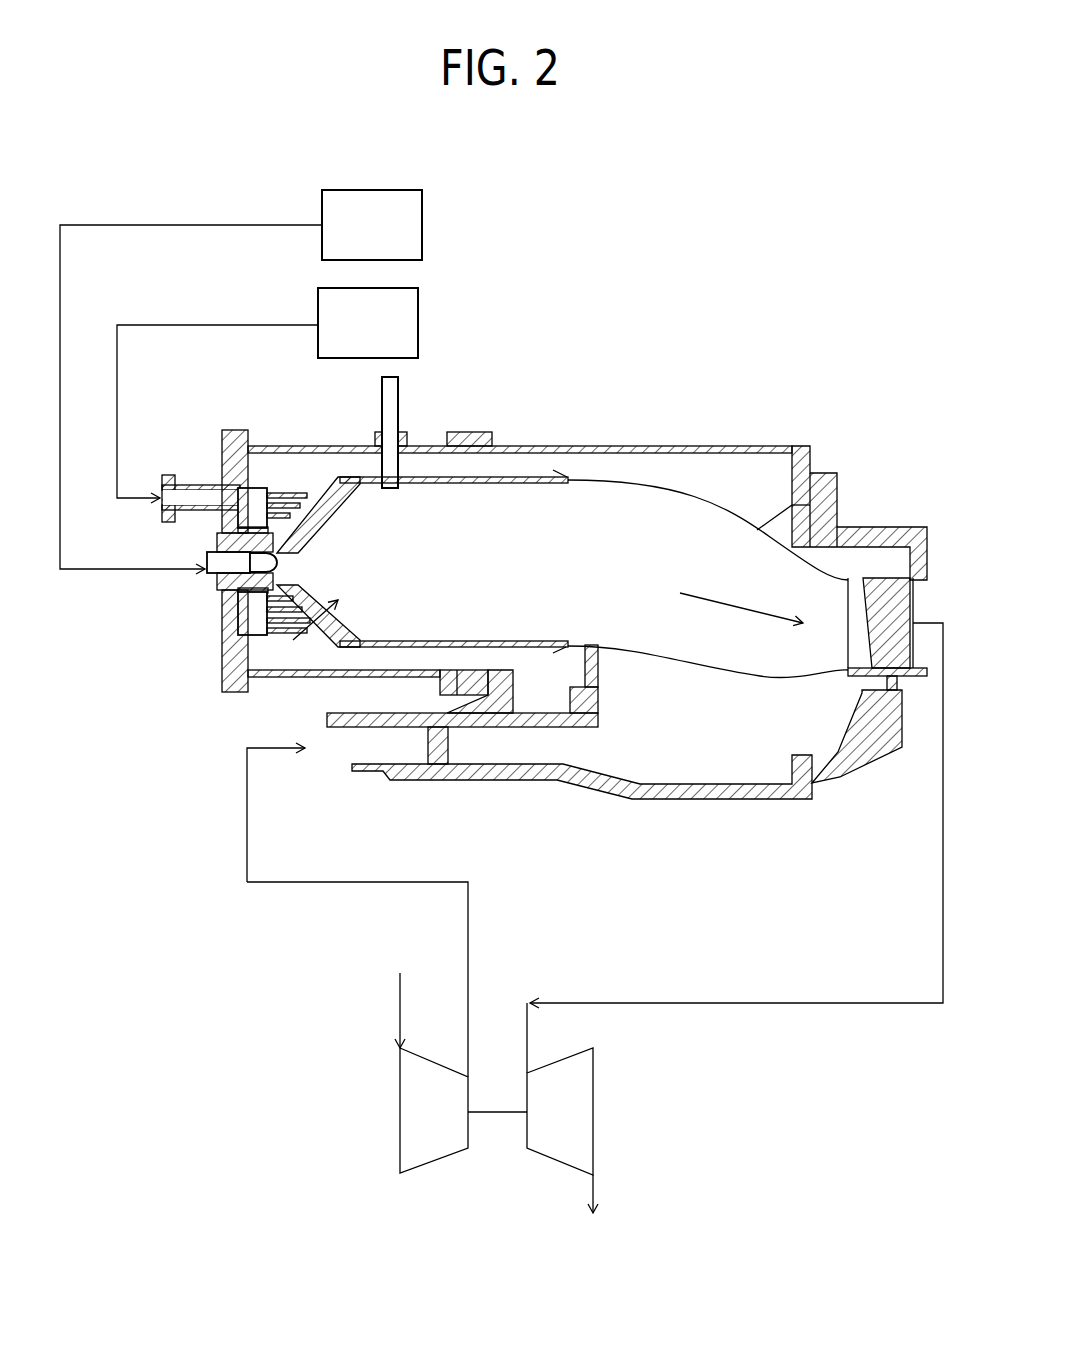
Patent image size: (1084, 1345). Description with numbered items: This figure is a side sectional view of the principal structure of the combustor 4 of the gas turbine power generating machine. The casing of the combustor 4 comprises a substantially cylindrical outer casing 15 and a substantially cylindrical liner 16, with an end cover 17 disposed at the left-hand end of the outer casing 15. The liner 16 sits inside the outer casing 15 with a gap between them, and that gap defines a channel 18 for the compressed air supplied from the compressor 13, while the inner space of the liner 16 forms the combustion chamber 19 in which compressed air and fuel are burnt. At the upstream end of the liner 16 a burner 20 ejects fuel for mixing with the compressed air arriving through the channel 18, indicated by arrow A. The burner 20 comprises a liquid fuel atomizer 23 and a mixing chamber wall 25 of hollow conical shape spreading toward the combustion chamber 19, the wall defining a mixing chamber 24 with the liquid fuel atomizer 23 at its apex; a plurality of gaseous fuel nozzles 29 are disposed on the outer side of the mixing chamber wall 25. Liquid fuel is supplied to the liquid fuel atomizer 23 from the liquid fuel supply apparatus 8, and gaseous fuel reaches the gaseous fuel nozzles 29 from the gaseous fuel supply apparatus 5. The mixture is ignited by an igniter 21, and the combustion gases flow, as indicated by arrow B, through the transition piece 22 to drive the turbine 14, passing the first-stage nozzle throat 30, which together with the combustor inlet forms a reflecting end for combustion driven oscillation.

The combustor 4 is at (586, 437).
The gaseous fuel supply apparatus 5 is at (418, 328).
The liquid fuel supply apparatus 8 is at (422, 228).
The compressor 13 is at (432, 1165).
The turbine 14 is at (550, 1158).
The outer casing 15 is at (350, 446).
The liner 16 is at (525, 477).
The end cover 17 is at (222, 447).
The channel 18 is at (298, 655).
The combustion chamber 19 is at (457, 573).
The burner 20 is at (297, 480).
The igniter 21 is at (398, 390).
The transition piece 22 is at (633, 477).
The liquid fuel atomizer 23 is at (207, 571).
The mixing chamber 24 is at (333, 575).
The mixing chamber wall 25 is at (325, 475).
The gaseous fuel nozzles 29 is at (278, 632).
The first-stage nozzle throat 30 is at (878, 562).